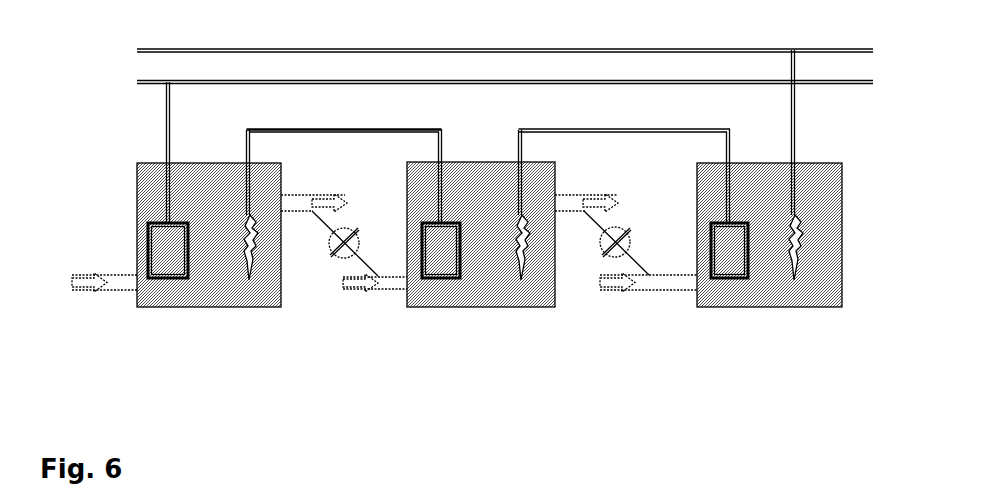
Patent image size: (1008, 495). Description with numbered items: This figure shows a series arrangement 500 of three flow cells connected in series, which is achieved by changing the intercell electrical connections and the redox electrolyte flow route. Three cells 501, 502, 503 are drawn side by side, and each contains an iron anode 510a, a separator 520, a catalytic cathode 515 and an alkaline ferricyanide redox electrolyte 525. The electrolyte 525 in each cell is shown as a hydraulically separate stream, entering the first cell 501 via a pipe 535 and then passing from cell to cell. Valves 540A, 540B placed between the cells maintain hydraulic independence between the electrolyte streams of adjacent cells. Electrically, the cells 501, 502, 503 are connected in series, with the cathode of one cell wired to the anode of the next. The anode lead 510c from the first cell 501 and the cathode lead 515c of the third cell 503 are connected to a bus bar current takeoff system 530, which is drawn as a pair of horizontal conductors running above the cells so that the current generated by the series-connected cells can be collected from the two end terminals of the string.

The series arrangement 500 is at (88, 128).
The first cell 501 is at (148, 310).
The second cell 502 is at (505, 308).
The third cell 503 is at (778, 308).
The iron anode 510a is at (168, 105).
The anode lead 510c is at (733, 150).
The catalytic cathode 515 is at (258, 238).
The cathode lead 515c is at (796, 131).
The separator 520 is at (158, 222).
The alkaline ferricyanide redox electrolyte 525 is at (258, 284).
The bus bar current takeoff system 530 is at (662, 50).
The pipe 535 is at (94, 273).
The valve 540A is at (360, 232).
The valve 540B is at (633, 220).